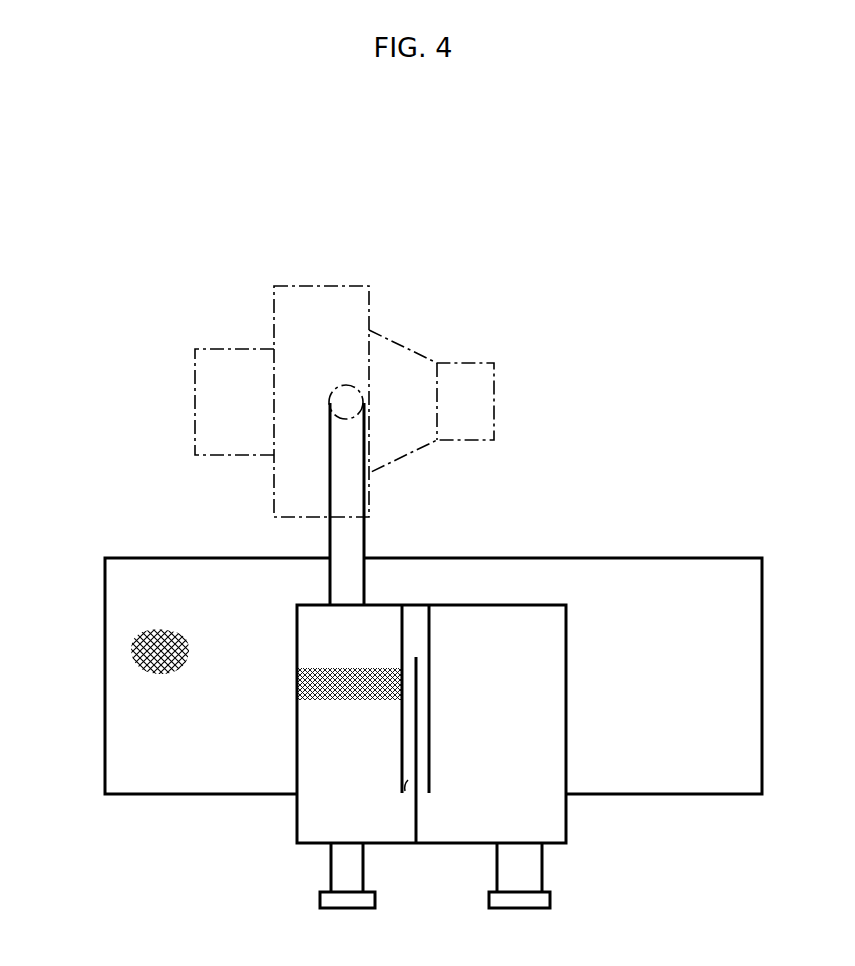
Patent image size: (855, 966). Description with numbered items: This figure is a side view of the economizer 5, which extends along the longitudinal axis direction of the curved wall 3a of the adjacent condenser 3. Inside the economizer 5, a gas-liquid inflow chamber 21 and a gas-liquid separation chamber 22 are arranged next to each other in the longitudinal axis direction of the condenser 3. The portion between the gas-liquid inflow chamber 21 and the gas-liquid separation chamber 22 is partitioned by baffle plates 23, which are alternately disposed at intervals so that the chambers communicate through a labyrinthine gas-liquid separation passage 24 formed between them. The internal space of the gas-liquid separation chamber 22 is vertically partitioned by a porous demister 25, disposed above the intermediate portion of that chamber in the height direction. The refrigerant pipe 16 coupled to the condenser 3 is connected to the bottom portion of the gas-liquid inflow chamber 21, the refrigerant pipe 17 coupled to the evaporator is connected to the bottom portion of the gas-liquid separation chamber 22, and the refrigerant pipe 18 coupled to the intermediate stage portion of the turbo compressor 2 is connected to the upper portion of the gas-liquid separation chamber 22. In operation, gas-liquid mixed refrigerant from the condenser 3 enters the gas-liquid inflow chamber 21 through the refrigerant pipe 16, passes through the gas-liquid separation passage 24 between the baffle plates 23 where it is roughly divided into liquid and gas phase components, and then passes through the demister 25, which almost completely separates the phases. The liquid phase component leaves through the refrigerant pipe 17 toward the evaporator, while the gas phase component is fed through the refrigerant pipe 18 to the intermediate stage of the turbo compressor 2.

The turbo compressor 2 is at (315, 286).
The condenser 3 is at (141, 558).
The curved wall 3a is at (132, 651).
The economizer 5 is at (508, 605).
The refrigerant pipe 16 is at (543, 865).
The refrigerant pipe 17 is at (330, 866).
The refrigerant pipe 18 is at (365, 536).
The gas-liquid inflow chamber 21 is at (481, 755).
The gas-liquid separation chamber 22 is at (338, 757).
The baffle plates 23 is at (401, 639).
The gas-liquid separation passage 24 is at (406, 792).
The demister 25 is at (297, 682).